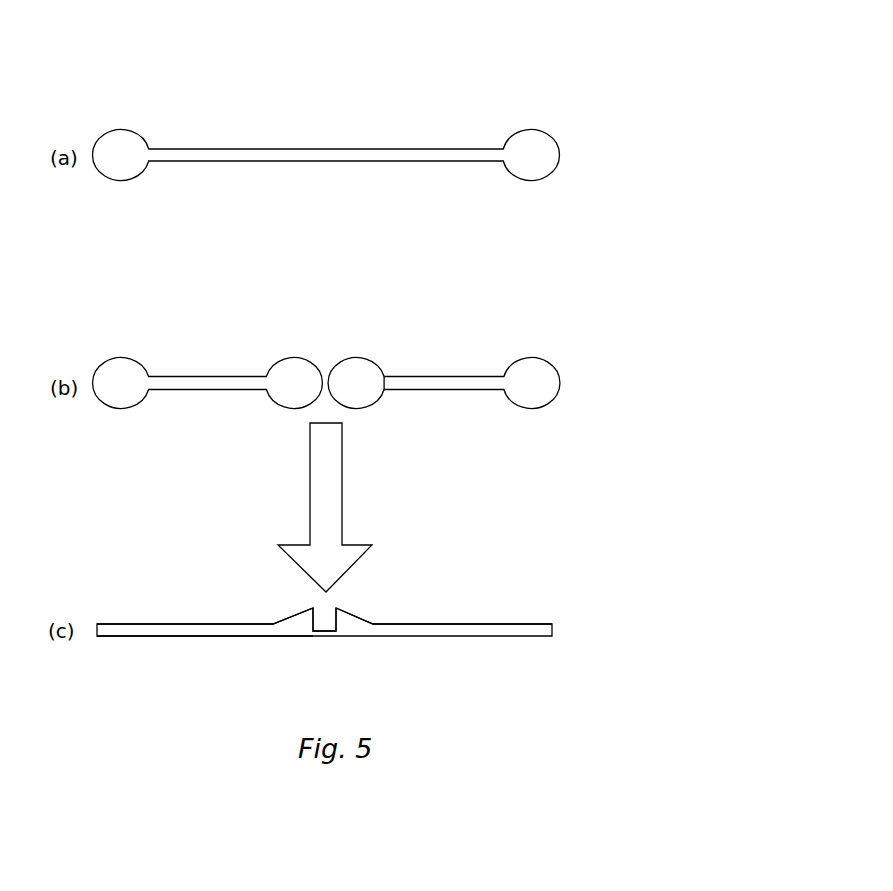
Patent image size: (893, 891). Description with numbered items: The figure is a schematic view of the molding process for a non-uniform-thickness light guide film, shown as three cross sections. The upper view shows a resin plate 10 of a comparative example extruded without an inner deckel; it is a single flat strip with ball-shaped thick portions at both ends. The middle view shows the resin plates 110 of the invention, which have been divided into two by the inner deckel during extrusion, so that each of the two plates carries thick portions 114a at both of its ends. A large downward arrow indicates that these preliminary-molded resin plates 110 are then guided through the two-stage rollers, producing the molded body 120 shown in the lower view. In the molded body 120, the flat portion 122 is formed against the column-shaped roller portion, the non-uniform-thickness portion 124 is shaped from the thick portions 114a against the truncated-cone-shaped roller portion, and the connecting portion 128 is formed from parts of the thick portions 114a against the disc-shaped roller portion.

The resin plate 10 is at (475, 111).
The resin plates 110 is at (446, 346).
The thick portions 114a is at (362, 367).
The molded body 120 is at (336, 613).
The flat portion 122 is at (213, 628).
The non-uniform-thickness portion 124 is at (353, 620).
The connecting portion 128 is at (328, 636).